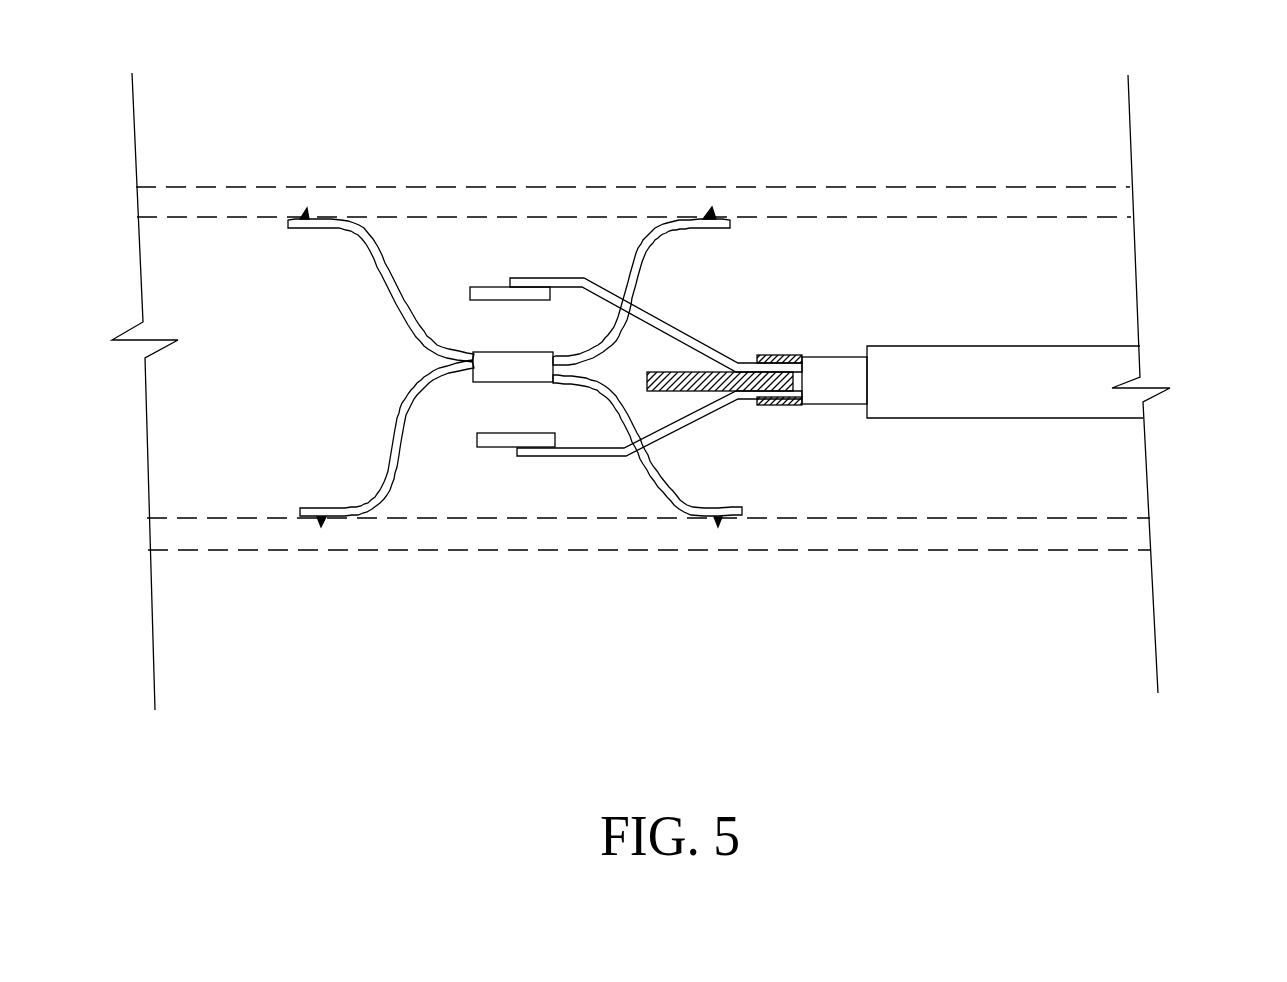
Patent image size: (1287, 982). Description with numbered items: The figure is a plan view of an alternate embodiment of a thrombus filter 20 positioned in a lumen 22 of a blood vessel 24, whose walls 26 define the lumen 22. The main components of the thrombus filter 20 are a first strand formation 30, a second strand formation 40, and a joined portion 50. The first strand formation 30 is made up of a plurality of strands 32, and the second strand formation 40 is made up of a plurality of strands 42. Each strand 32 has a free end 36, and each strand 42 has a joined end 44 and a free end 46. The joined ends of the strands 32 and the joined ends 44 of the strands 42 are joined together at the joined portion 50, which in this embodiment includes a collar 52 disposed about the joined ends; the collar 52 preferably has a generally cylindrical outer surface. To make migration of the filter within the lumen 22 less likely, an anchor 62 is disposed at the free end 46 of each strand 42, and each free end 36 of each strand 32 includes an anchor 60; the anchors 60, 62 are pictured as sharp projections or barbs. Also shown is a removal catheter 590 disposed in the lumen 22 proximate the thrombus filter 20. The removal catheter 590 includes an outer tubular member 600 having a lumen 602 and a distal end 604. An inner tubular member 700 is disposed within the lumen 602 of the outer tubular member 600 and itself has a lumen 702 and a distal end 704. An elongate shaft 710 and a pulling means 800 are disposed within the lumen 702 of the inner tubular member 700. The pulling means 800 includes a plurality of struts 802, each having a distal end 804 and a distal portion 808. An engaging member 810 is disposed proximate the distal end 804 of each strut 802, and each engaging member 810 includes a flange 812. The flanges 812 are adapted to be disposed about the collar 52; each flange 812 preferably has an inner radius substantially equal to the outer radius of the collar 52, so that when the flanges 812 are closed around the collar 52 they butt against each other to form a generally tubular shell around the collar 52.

The thrombus filter 20 is at (483, 100).
The lumen 22 is at (1075, 288).
The blood vessel 24 is at (1025, 195).
The walls 26 is at (1103, 205).
The first strand formation 30 is at (712, 574).
The strands 32 is at (647, 235).
The free end 36 is at (720, 219).
The second strand formation 40 is at (341, 573).
The strands 42 is at (400, 422).
The joined end 44 is at (423, 358).
The free end 46 is at (290, 500).
The joined portion 50 is at (527, 495).
The collar 52 is at (476, 353).
The anchor 60 is at (710, 220).
The anchor 62 is at (308, 217).
The removal catheter 590 is at (1113, 445).
The outer tubular member 600 is at (1048, 380).
The lumen 602 is at (1145, 375).
The distal end 604 is at (877, 335).
The inner tubular member 700 is at (820, 380).
The lumen 702 is at (800, 405).
The distal end 704 is at (790, 402).
The elongate shaft 710 is at (707, 373).
The pulling means 800 is at (723, 444).
The struts 802 is at (732, 400).
The distal end 804 is at (534, 464).
The distal portion 808 is at (612, 472).
The engaging member 810 is at (500, 458).
The flange 812 is at (485, 445).